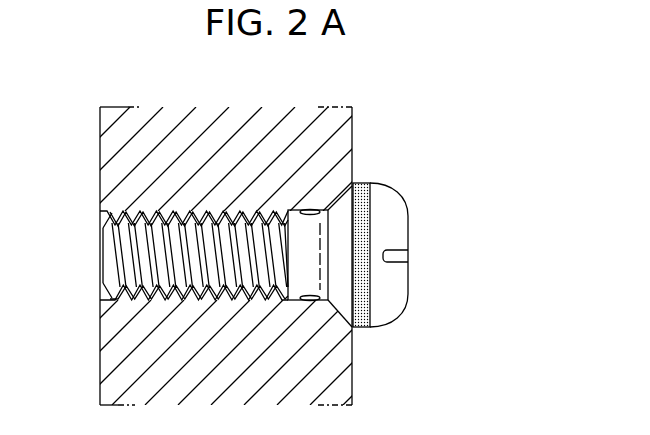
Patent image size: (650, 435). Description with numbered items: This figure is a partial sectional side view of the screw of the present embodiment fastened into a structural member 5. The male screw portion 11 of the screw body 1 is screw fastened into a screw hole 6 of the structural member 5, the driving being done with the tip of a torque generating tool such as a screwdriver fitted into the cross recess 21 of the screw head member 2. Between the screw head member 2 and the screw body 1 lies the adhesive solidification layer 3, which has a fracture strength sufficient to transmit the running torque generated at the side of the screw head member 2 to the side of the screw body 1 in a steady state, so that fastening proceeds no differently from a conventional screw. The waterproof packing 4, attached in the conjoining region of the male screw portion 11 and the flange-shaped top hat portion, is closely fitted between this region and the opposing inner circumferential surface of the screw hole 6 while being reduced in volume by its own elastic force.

The screw body 1 is at (97, 264).
The screw head member 2 is at (409, 219).
The adhesive solidification layer 3 is at (364, 184).
The waterproof packing 4 is at (309, 209).
The structural member 5 is at (100, 130).
The screw hole 6 is at (360, 333).
The male screw portion 11 is at (103, 222).
The cross recess 21 is at (396, 256).